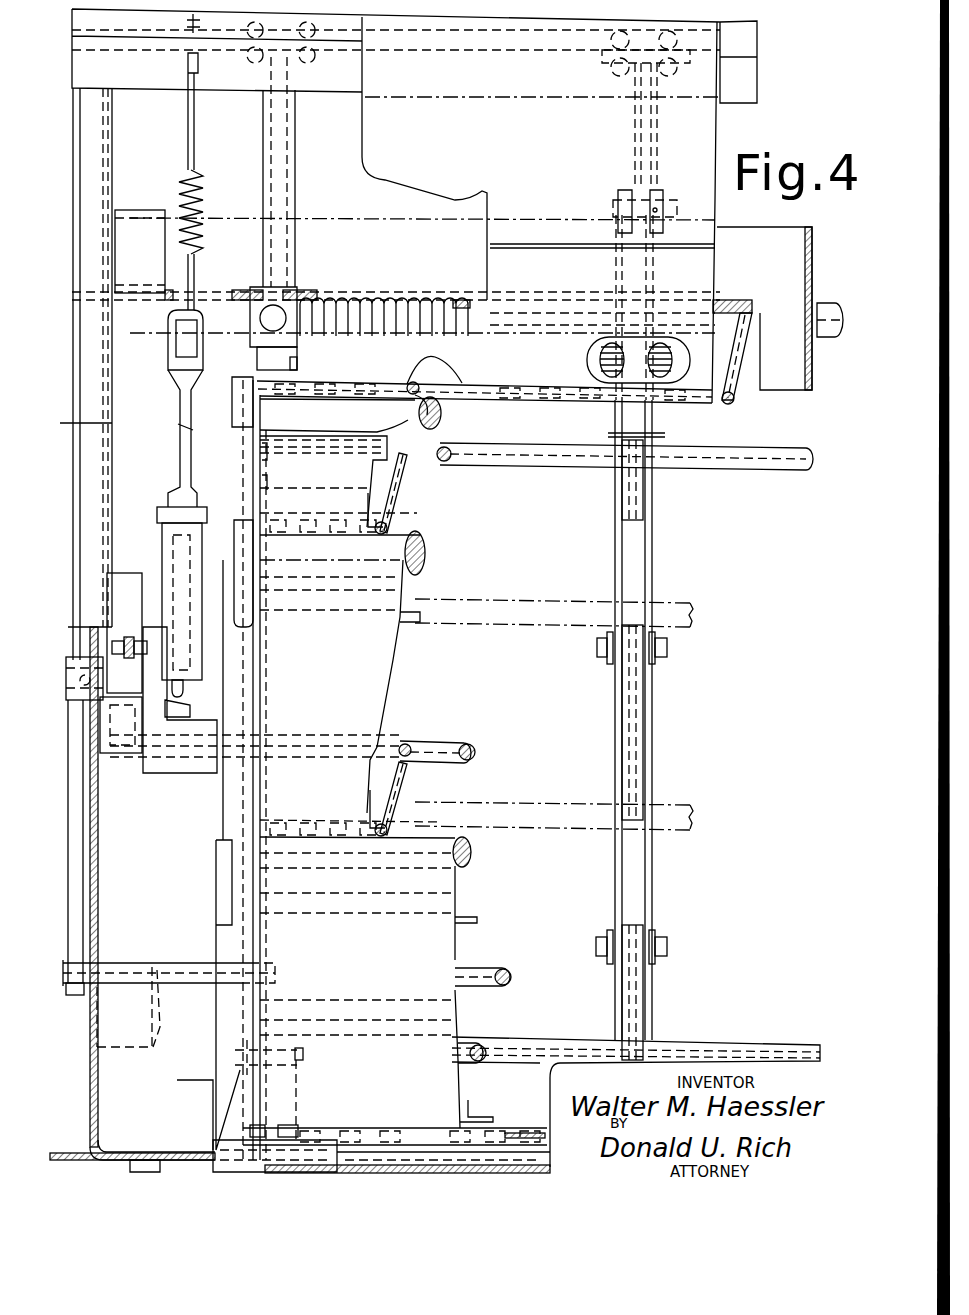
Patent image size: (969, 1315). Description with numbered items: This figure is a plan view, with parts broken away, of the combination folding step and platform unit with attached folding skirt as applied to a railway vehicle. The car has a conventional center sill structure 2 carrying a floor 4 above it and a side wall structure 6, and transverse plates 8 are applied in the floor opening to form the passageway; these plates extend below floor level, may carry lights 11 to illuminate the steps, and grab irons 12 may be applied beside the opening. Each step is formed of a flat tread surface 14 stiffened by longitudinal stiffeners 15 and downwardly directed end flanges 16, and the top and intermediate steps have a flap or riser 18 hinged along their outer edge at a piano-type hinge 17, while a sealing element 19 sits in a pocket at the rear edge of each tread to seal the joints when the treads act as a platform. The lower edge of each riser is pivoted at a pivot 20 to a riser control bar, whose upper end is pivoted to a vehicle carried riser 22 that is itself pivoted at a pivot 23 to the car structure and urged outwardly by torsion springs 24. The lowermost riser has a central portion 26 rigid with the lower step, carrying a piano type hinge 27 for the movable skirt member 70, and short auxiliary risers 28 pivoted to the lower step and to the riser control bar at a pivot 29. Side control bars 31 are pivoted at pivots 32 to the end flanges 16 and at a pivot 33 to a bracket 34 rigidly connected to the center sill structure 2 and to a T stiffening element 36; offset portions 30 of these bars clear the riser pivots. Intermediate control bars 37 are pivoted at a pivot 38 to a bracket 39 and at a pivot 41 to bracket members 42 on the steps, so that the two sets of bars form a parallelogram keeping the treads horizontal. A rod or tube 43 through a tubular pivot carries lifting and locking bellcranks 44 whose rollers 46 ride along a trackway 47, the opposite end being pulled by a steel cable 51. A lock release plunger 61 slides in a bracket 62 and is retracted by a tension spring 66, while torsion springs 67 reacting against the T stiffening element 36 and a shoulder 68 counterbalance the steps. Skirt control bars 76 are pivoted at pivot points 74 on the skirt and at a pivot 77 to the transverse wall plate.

The center sill structure 2 is at (357, 28).
The floor 4 is at (396, 210).
The side wall structure 6 is at (72, 1153).
The transverse plates 8 is at (113, 405).
The lights 11 is at (160, 1030).
The grab irons 12 is at (130, 1170).
The tread surface 14 is at (466, 948).
The stiffeners 15 is at (372, 500).
The end flanges 16 is at (262, 490).
The hinge 17 is at (386, 526).
The flap or riser 18 is at (405, 480).
The sealing element 19 is at (441, 413).
The pivot 20 is at (742, 312).
The vehicle carried riser 22 is at (731, 356).
The pivot 23 is at (411, 380).
The torsion springs 24 is at (600, 360).
The central portion 26 is at (500, 1136).
The piano type hinge 27 is at (540, 1130).
The auxiliary risers 28 is at (300, 1082).
The pivot 29 is at (272, 1045).
The offset portions 30 is at (236, 407).
The side control bars 31 is at (262, 335).
The pivots 32 is at (782, 462).
The pivot 33 is at (475, 330).
The bracket 34 is at (290, 191).
The T stiffening element 36 is at (830, 278).
The intermediate control bars 37 is at (622, 274).
The pivot 38 is at (613, 205).
The bracket 39 is at (640, 157).
The pivot 41 is at (667, 650).
The bracket members 42 is at (643, 509).
The rod or tube 43 is at (474, 747).
The lifting and locking bellcranks 44 is at (157, 774).
The rollers 46 is at (122, 755).
The trackway 47 is at (125, 582).
The steel cable 51 is at (130, 637).
The plunger 61 is at (180, 462).
The bracket 62 is at (170, 548).
The tension spring 66 is at (196, 212).
The torsion springs 67 is at (370, 292).
The shoulder 68 is at (300, 357).
The movable skirt member 70 is at (545, 1050).
The pivot points 74 is at (178, 968).
The skirt control bars 76 is at (74, 843).
The pivot 77 is at (90, 666).